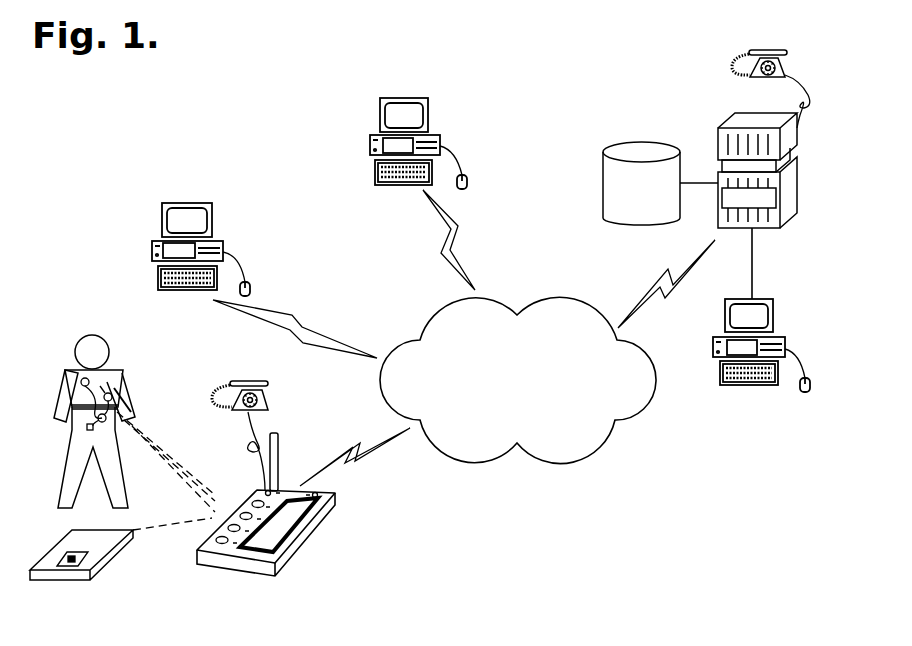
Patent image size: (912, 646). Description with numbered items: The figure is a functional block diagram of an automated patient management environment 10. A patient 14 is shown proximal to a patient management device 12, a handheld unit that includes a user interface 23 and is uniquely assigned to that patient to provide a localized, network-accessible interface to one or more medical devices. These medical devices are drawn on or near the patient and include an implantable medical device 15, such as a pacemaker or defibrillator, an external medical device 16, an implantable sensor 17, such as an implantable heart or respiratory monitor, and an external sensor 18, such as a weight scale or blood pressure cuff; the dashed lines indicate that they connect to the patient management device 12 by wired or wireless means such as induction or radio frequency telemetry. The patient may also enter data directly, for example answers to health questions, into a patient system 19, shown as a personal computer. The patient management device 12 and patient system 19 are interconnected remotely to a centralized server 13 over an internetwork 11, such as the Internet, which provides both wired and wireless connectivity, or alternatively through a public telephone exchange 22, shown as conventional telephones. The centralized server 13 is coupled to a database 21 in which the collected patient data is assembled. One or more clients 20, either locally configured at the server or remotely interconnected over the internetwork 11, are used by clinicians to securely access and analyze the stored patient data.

The automated patient management environment 10 is at (135, 112).
The internetwork 11 is at (437, 314).
The patient management device 12 is at (240, 577).
The centralized server 13 is at (718, 128).
The patient 14 is at (72, 428).
The implantable medical device 15 is at (128, 383).
The external medical device 16 is at (80, 381).
The implantable sensor 17 is at (137, 402).
The external sensor 18 is at (112, 563).
The patient system 19 is at (213, 220).
The client 20 is at (428, 113).
The database 21 is at (603, 183).
The public telephone exchange 22 is at (250, 380).
The user interface 23 is at (326, 510).